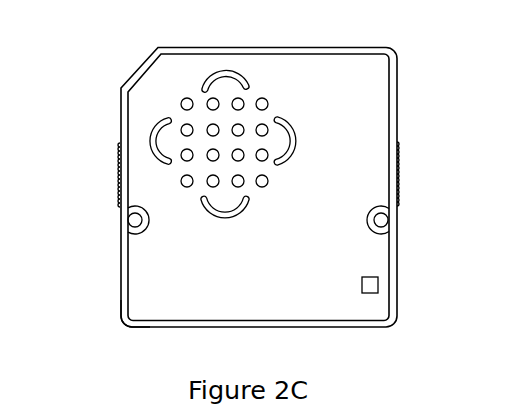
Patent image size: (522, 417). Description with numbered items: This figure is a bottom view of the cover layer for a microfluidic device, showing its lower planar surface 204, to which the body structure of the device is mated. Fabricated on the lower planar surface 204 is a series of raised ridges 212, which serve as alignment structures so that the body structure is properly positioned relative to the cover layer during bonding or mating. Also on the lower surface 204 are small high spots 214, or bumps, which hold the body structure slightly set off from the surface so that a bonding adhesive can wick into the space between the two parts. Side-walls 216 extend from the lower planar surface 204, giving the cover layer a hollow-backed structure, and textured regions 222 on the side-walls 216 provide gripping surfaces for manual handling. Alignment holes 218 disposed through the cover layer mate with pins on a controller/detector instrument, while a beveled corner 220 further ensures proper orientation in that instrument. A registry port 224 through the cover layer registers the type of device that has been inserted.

The lower planar surface 204 is at (140, 297).
The raised ridges 212 is at (169, 121).
The high spots 214 is at (200, 114).
The side-walls 216 is at (140, 328).
The alignment holes 218 is at (134, 220).
The beveled corner 220 is at (135, 63).
The textured regions 222 is at (398, 165).
The registry port 224 is at (121, 158).